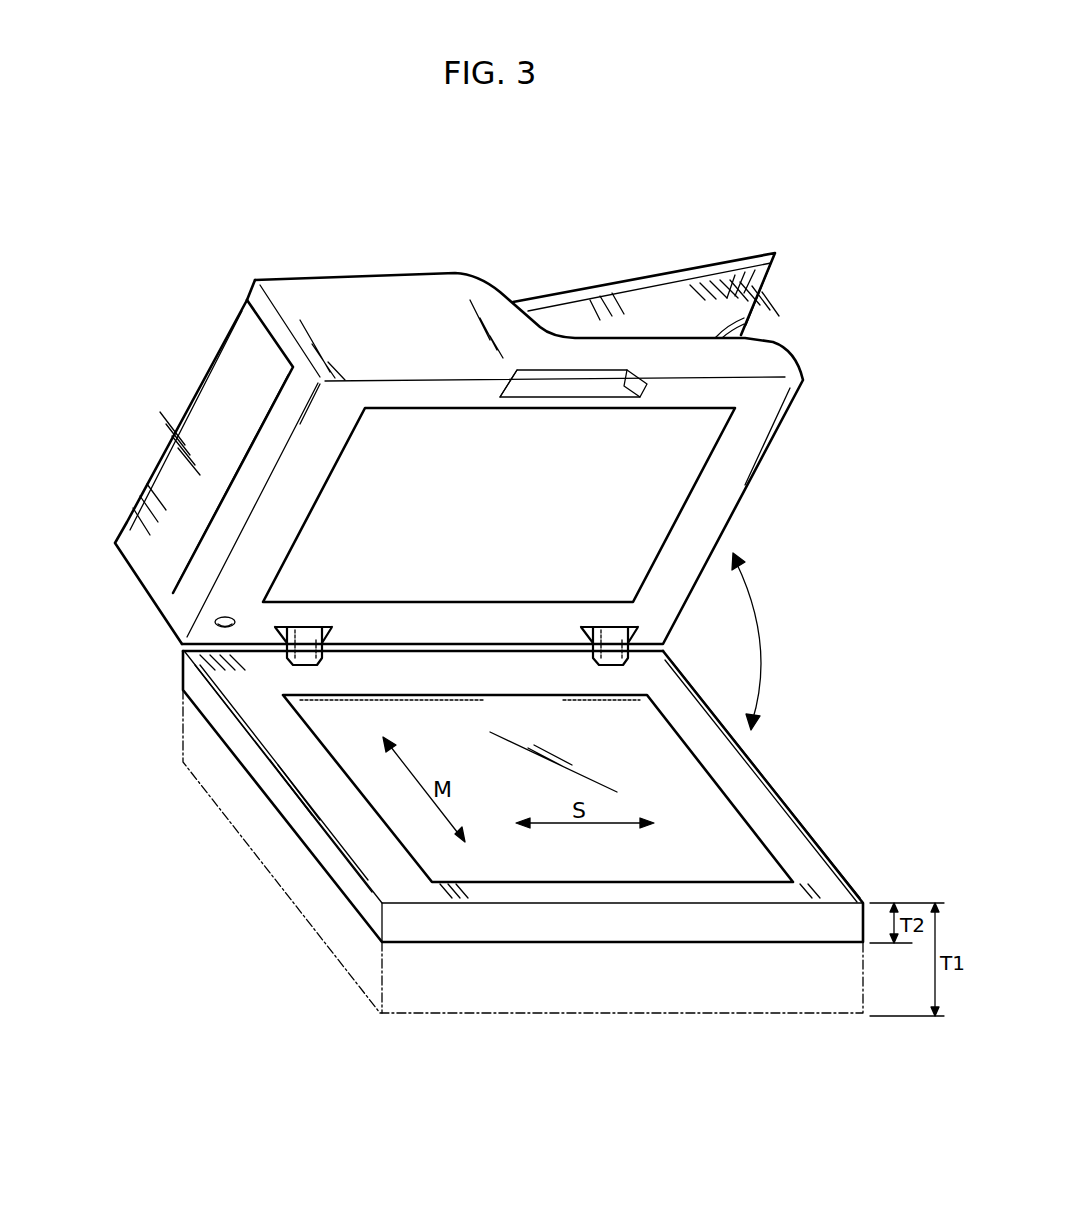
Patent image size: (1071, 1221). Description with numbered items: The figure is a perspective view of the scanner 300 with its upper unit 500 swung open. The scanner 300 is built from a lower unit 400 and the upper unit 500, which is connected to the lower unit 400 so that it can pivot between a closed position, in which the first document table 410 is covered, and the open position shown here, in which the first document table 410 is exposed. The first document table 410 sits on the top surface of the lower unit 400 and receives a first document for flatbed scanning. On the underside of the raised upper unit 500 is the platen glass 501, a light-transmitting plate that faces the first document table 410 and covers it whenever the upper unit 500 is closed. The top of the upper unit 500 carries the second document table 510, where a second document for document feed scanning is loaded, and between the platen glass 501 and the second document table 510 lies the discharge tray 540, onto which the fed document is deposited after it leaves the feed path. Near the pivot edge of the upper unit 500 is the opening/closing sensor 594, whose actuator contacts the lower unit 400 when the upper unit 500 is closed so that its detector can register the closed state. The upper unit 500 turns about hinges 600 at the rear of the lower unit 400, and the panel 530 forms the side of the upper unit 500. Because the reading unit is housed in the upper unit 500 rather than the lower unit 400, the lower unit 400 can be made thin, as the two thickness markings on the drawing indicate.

The scanner 300 is at (88, 696).
The lower unit 400 is at (230, 755).
The first document table 410 is at (702, 828).
The upper unit 500 is at (168, 634).
The platen glass 501 is at (688, 452).
The second document table 510 is at (693, 270).
The document discharge tray / side panel 530 is at (193, 400).
The discharge tray 540 is at (747, 323).
The opening/closing sensor 594 is at (213, 632).
The hinge 600 is at (620, 641).